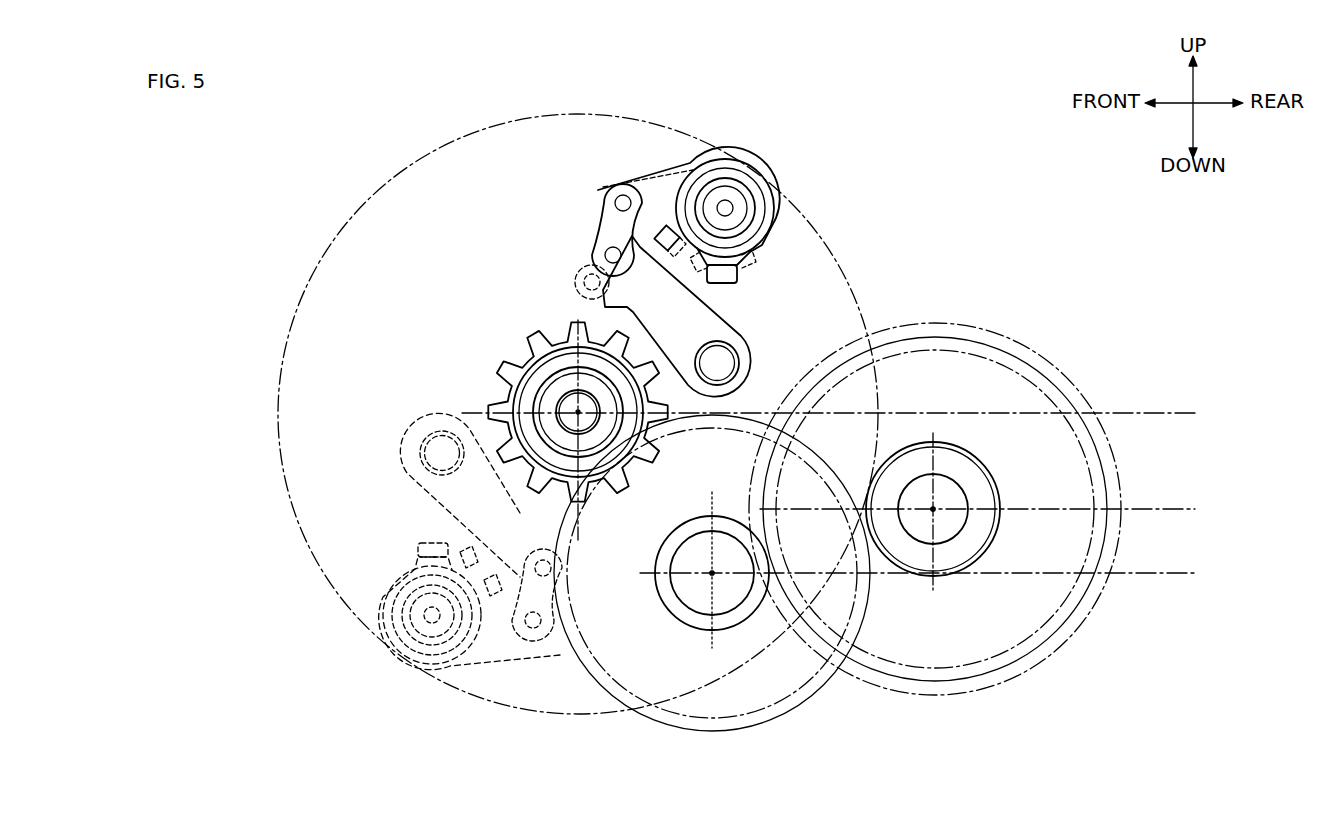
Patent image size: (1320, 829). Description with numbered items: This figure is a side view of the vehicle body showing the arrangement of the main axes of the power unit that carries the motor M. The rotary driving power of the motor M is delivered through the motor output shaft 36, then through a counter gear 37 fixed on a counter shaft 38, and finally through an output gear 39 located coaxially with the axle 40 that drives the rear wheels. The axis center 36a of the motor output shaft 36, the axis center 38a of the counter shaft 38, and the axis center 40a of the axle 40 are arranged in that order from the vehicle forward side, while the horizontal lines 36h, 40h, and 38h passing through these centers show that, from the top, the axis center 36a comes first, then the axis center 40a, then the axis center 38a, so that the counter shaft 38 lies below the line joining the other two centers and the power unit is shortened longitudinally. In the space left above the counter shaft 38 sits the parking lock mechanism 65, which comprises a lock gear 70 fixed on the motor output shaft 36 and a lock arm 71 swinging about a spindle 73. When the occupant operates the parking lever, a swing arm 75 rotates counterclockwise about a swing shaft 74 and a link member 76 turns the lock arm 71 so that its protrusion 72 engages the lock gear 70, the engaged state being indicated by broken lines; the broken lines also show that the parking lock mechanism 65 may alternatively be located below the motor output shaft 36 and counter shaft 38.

The motor M is at (378, 190).
The motor output shaft 36 is at (567, 400).
The axis center 36a is at (580, 425).
The horizontal line 36h is at (1140, 413).
The counter gear 37 is at (681, 735).
The counter shaft 38 is at (733, 592).
The axis center 38a is at (711, 575).
The horizontal line 38h is at (1140, 573).
The output gear 39 is at (1018, 333).
The axle 40 is at (943, 523).
The axis center 40a is at (934, 510).
The horizontal line 40h is at (1140, 509).
The parking lock mechanism 65 is at (648, 173).
The lock gear 70 is at (520, 456).
The lock arm 71 is at (703, 326).
The protrusion 72 is at (592, 308).
The spindle 73 is at (723, 367).
The swing shaft 74 is at (727, 207).
The swing arm 75 is at (666, 154).
The link member 76 is at (606, 216).